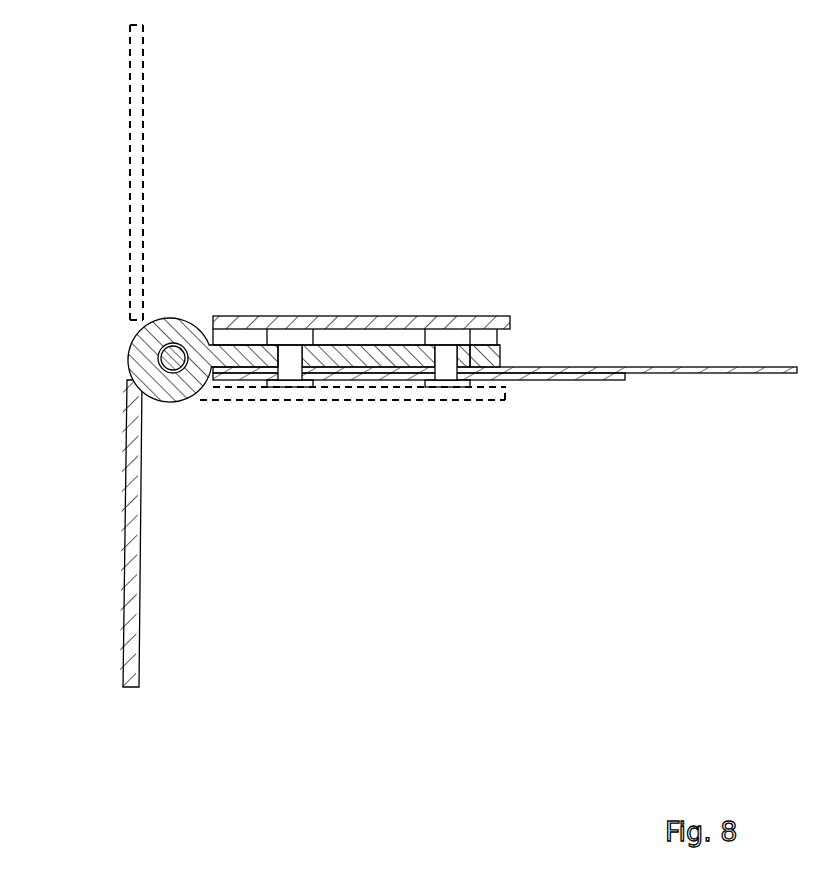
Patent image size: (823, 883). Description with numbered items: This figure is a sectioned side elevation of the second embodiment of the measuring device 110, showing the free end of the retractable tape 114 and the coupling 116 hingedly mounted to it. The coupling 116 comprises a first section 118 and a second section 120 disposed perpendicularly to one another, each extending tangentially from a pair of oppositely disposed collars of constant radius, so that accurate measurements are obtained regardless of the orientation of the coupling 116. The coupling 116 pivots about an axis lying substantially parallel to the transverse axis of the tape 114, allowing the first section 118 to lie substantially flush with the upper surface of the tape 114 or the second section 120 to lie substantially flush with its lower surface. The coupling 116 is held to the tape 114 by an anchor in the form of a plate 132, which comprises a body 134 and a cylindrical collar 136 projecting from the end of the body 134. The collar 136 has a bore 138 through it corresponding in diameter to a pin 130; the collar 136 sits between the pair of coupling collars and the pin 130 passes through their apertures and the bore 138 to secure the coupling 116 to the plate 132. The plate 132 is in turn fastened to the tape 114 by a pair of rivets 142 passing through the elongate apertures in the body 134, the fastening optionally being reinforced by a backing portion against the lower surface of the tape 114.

The measuring device 110 is at (440, 240).
The retractable tape 114 is at (708, 367).
The coupling 116 is at (127, 462).
The first section 118 is at (360, 318).
The second section 120 is at (128, 613).
The pin 130 is at (175, 350).
The plate 132 is at (500, 357).
The body 134 is at (363, 375).
The cylindrical collar 136 is at (135, 340).
The bore 138 is at (163, 369).
The rivets 142 is at (293, 385).